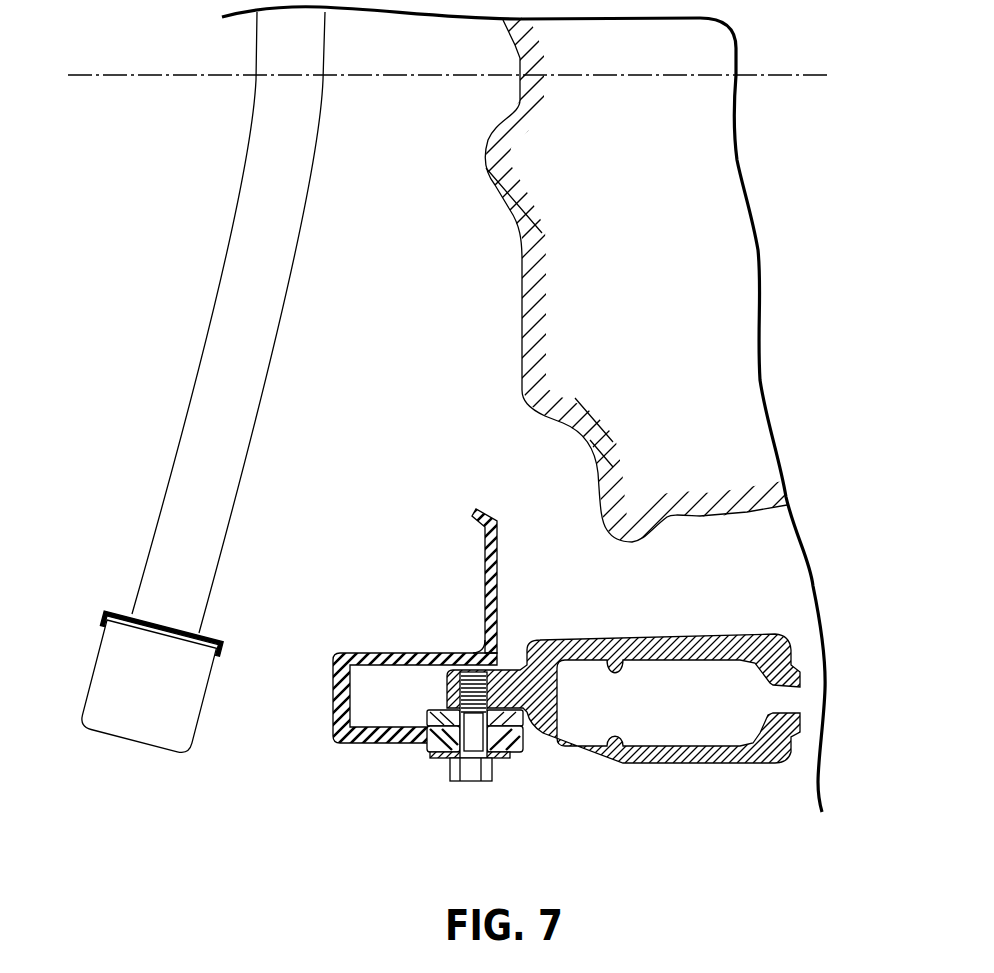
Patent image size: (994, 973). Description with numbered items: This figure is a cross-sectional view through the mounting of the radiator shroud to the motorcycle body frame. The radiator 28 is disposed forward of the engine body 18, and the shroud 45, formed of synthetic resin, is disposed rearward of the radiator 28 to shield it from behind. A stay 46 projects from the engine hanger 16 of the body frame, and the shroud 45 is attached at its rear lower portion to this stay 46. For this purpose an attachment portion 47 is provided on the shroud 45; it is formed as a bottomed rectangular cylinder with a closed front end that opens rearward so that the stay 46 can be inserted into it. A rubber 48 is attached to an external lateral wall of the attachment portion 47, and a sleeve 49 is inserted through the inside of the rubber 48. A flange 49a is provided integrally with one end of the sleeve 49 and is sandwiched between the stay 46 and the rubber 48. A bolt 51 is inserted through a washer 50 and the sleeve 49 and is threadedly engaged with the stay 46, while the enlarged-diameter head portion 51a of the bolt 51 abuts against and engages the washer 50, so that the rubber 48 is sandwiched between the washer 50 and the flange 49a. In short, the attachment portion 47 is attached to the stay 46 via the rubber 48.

The engine hanger 16 is at (697, 648).
The engine body 18 is at (704, 288).
The radiator 28 is at (243, 292).
The shroud 45 is at (496, 584).
The stay 46 is at (447, 682).
The attachment portion 47 is at (523, 743).
The rubber 48 is at (428, 743).
The sleeve 49 is at (510, 718).
The flange 49a is at (436, 712).
The washer 50 is at (440, 760).
The bolt 51 is at (497, 668).
The enlarged-diameter head portion 51a is at (478, 770).